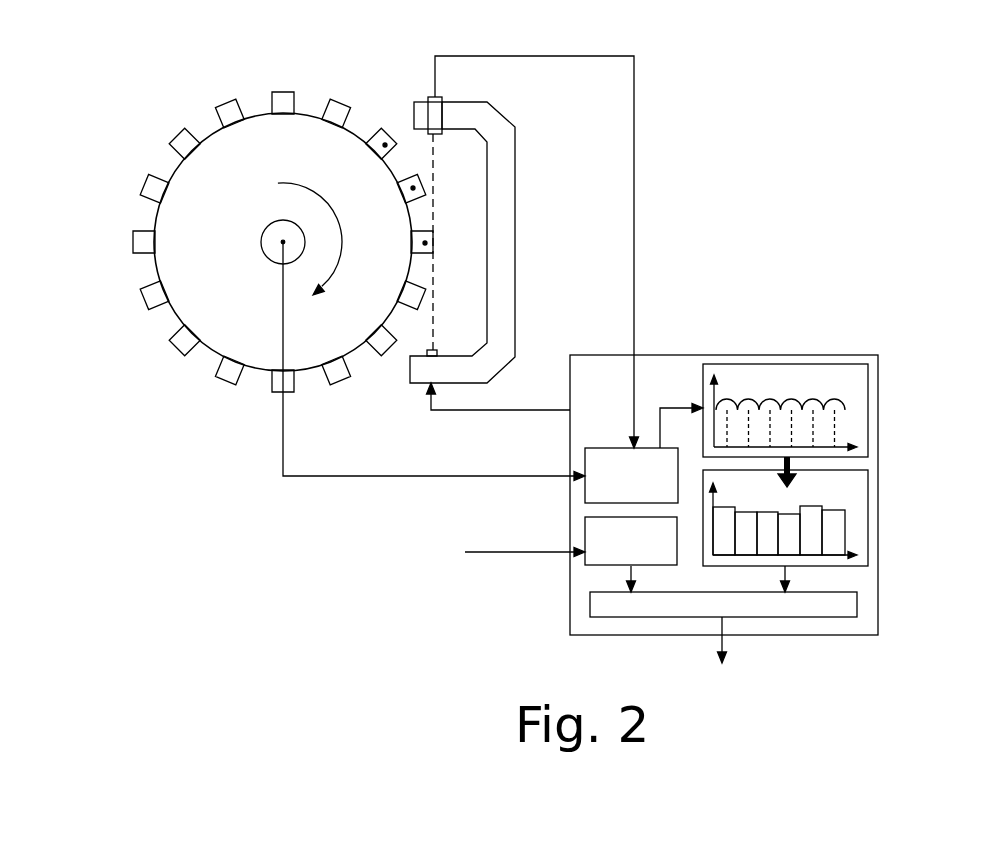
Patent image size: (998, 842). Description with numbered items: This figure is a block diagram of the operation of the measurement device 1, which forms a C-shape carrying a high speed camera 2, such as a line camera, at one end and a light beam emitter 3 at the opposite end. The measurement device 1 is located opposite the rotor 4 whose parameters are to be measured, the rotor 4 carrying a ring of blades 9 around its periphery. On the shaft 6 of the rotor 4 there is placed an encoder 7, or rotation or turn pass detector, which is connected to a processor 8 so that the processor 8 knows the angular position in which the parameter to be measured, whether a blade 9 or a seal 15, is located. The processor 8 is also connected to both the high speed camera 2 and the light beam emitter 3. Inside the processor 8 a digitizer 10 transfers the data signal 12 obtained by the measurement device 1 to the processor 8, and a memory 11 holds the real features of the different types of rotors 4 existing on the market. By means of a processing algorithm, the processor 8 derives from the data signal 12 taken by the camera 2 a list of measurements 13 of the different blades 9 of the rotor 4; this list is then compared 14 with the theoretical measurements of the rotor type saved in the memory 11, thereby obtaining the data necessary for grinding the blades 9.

The measurement device 1 is at (500, 255).
The high speed camera 2 is at (433, 113).
The light beam emitter 3 is at (424, 360).
The rotor 4 is at (178, 345).
The shaft 6 is at (271, 236).
The encoder 7 is at (291, 232).
The processor 8 is at (778, 344).
The blade 9 is at (385, 145).
The digitizer 10 is at (644, 454).
The memory 11 is at (631, 541).
The data signal 12 is at (877, 398).
The list of measurements 13 is at (877, 517).
The comparison 14 is at (723, 593).
The seal 15 is at (724, 657).